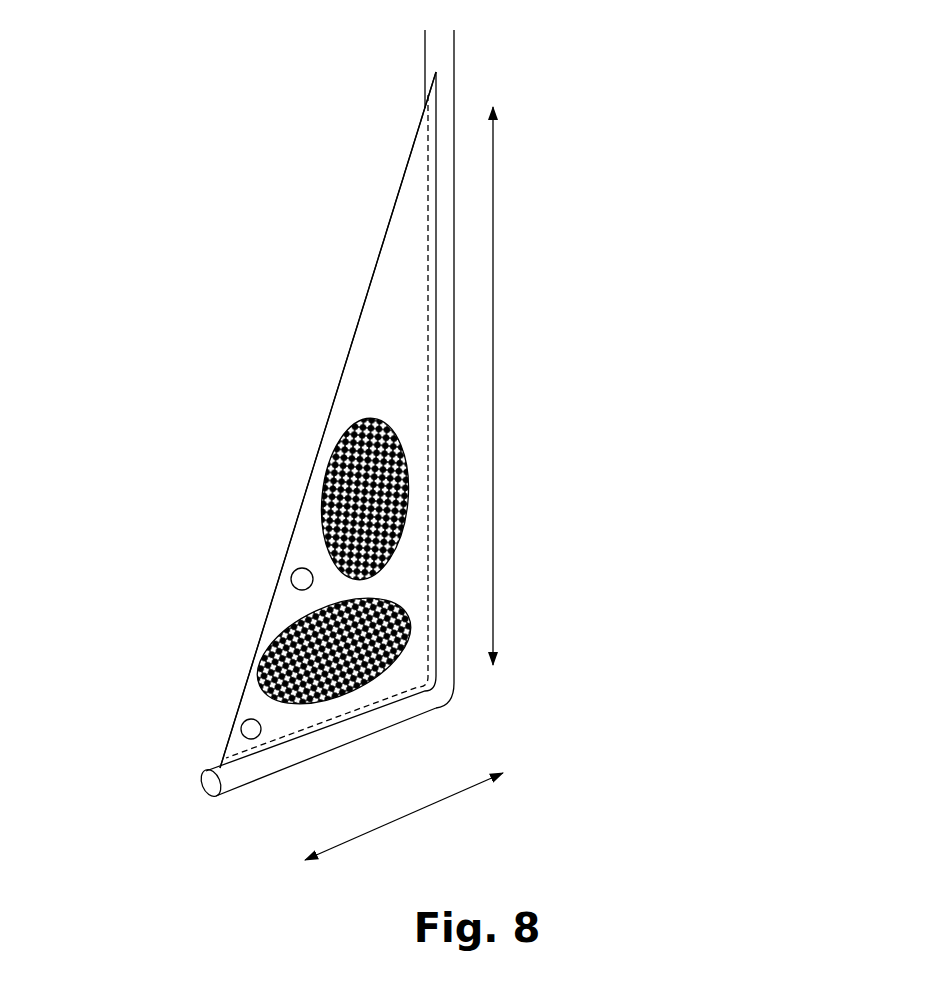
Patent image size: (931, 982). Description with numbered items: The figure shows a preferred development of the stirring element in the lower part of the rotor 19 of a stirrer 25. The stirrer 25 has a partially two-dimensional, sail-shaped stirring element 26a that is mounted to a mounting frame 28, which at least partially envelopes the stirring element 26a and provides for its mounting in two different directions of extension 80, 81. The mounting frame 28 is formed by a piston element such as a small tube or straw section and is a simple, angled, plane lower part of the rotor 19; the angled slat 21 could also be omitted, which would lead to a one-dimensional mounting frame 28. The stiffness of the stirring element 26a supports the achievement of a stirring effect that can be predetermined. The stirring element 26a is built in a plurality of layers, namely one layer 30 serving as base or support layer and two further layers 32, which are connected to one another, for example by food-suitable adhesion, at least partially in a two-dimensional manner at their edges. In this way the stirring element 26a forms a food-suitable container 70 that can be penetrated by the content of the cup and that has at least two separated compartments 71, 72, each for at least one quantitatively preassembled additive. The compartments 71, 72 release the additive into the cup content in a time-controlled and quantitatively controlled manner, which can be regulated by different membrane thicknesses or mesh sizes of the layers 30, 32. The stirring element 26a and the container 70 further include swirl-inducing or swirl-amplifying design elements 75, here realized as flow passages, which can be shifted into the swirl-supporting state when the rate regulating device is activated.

The rotor 19 is at (439, 49).
The layer 30 is at (403, 267).
The stirring element 26a is at (342, 342).
The container 70 is at (308, 481).
The mounting frame 28 is at (437, 580).
The angled slat 21 is at (260, 772).
The compartment 72 is at (328, 537).
The compartment 71 is at (325, 665).
The further layers 32 is at (347, 435).
The design element 75 is at (291, 579).
The direction of extension 80 is at (493, 393).
The direction of extension 81 is at (398, 818).
The stirrer 25 is at (598, 706).